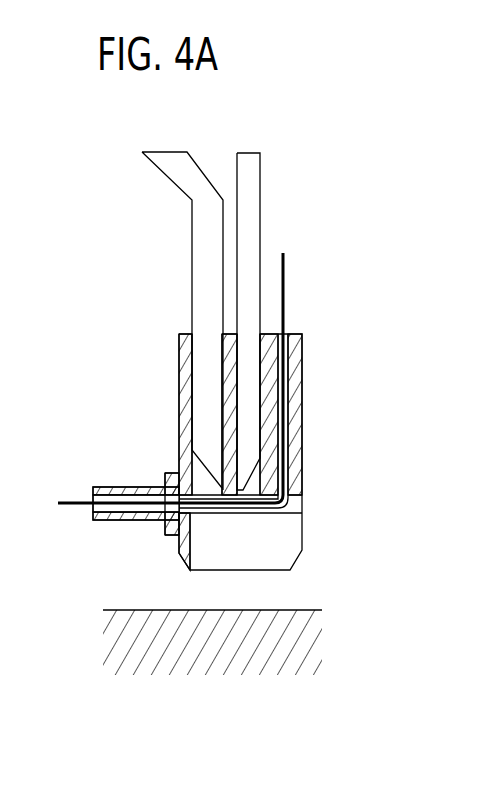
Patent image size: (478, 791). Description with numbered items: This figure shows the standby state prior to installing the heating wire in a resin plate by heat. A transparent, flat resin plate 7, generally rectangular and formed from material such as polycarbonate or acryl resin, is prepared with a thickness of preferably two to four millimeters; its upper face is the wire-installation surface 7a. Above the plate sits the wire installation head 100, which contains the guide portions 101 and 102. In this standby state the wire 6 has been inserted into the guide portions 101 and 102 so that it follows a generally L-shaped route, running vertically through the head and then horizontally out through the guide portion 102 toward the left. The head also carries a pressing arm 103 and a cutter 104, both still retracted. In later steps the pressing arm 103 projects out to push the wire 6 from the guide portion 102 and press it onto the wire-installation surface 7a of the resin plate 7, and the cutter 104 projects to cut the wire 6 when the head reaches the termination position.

The wire installation head 100 is at (343, 373).
The guide portion 101 is at (303, 432).
The guide portion 102 is at (102, 488).
The pressing arm 103 is at (262, 215).
The cutter 104 is at (196, 273).
The wire 6 is at (285, 285).
The resin plate 7 is at (153, 610).
The wire-installation surface 7a is at (270, 610).